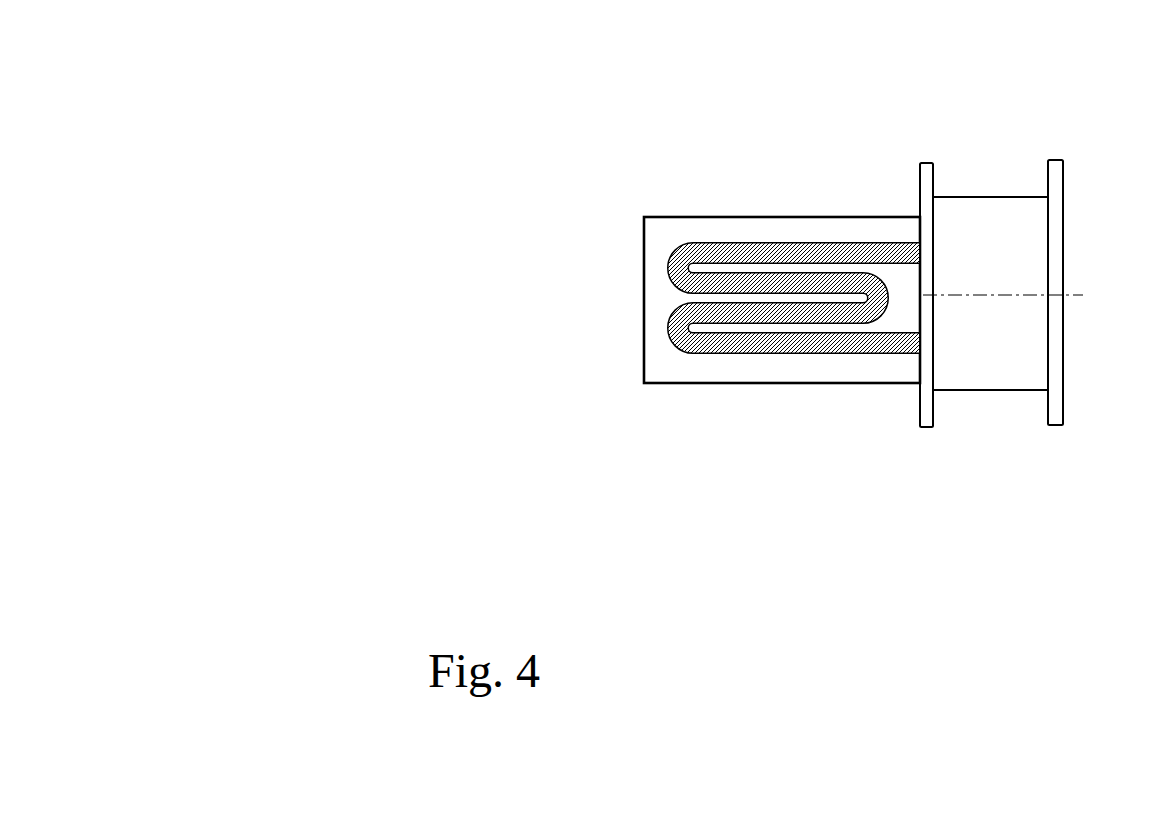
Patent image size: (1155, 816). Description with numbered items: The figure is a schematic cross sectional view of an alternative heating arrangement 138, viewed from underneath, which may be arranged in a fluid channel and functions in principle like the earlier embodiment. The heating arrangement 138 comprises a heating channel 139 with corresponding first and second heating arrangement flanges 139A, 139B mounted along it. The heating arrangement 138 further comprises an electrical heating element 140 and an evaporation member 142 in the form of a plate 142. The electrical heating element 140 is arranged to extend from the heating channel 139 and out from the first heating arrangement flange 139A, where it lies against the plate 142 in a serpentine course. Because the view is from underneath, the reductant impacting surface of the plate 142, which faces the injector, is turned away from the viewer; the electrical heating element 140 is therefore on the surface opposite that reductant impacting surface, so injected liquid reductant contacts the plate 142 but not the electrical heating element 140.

The heating arrangement 138 is at (816, 173).
The heating channel 139 is at (993, 213).
The first heating arrangement flange 139A is at (931, 200).
The second heating arrangement flange 139B is at (1061, 158).
The electrical heating element 140 is at (850, 352).
The evaporation member 142 is at (782, 384).